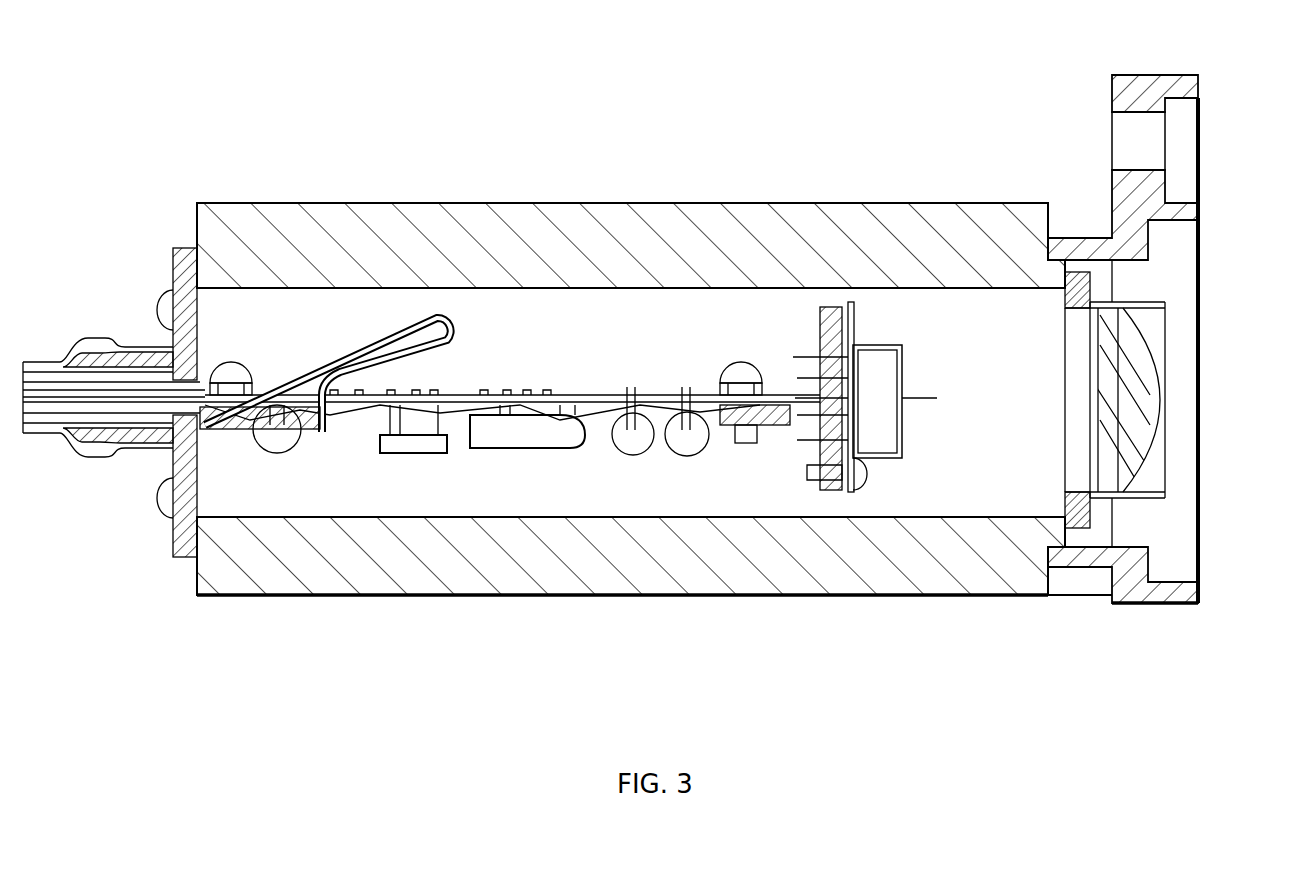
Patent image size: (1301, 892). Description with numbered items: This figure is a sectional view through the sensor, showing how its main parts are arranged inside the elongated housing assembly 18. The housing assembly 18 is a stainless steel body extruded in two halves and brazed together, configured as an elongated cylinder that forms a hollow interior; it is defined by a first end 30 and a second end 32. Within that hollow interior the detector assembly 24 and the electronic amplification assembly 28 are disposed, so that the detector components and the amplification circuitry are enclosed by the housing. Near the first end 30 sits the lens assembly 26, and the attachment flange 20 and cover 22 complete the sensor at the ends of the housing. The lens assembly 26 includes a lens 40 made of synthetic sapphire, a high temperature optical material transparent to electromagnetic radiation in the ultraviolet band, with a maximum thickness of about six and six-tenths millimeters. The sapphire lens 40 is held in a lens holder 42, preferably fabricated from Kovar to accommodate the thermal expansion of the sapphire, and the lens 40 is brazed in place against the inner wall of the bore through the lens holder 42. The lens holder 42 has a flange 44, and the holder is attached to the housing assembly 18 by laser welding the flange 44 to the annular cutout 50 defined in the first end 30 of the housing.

The housing assembly 18 is at (626, 152).
The attachment flange 20 is at (1210, 171).
The cover 22 is at (175, 263).
The detector assembly 24 is at (914, 372).
The lens assembly 26 is at (1162, 324).
The electronic amplification assembly 28 is at (516, 466).
The first end 30 is at (1069, 594).
The second end 32 is at (176, 576).
The lens 40 is at (1145, 408).
The lens holder 42 is at (1138, 498).
The flange 44 is at (905, 508).
The annular cutout 50 is at (1045, 515).